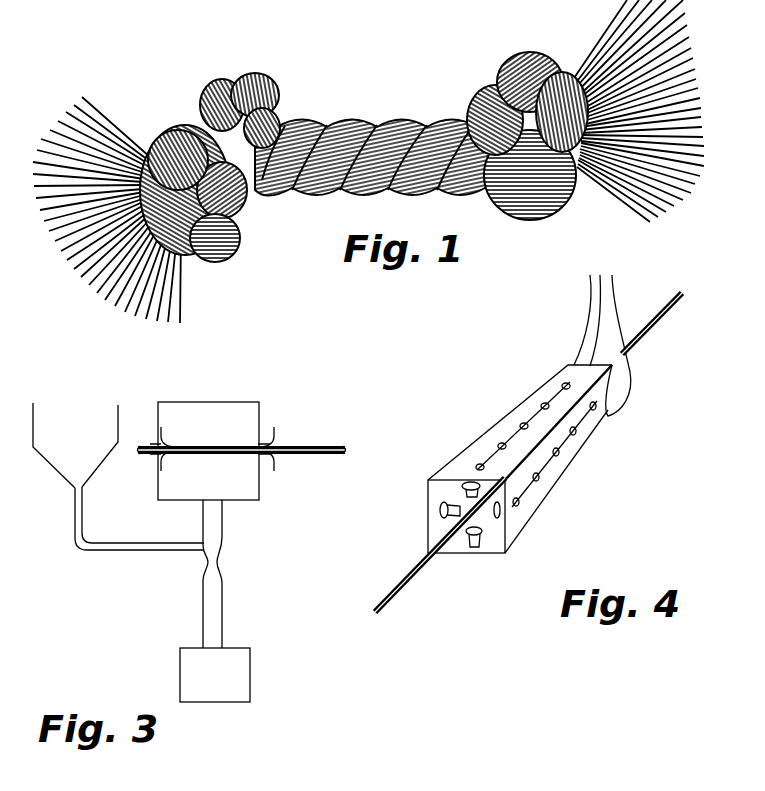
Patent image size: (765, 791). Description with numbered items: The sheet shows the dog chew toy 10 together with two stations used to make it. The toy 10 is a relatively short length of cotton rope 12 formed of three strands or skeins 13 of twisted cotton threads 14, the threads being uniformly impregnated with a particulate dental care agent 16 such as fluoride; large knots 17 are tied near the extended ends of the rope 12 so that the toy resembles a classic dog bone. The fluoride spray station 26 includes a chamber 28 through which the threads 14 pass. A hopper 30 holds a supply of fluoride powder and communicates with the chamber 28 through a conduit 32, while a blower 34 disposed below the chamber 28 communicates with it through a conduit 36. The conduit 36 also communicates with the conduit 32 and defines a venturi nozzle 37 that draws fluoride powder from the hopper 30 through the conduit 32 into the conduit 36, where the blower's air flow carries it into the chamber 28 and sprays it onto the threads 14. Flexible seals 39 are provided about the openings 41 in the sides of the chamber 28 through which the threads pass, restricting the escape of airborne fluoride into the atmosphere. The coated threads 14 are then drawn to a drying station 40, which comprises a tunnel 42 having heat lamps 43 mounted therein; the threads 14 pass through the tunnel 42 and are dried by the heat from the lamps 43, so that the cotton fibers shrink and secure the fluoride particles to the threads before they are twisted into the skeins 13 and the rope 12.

In FIG. 1, the dog chew toy 10 is at (215, 52).
In FIG. 1, the rope 12 is at (390, 121).
In FIG. 1, the strands or skeins 13 is at (335, 193).
In FIG. 1, the cotton threads 14 is at (347, 118).
In FIG. 3, the cotton threads 14 is at (222, 448).
In FIG. 4, the cotton threads 14 is at (410, 578).
In FIG. 1, the particulate dental care agent 16 is at (257, 76).
In FIG. 1, the knots 17 is at (177, 123).
In FIG. 3, the fluoride spray station 26 is at (295, 392).
In FIG. 3, the chamber 28 is at (192, 402).
In FIG. 3, the hopper 30 is at (120, 420).
In FIG. 3, the conduit 32 is at (126, 543).
In FIG. 3, the blower 34 is at (250, 663).
In FIG. 3, the conduit 36 is at (224, 610).
In FIG. 3, the venturi nozzle 37 is at (222, 562).
In FIG. 3, the flexible seals 39 is at (173, 440).
In FIG. 3, the openings 41 is at (157, 445).
In FIG. 4, the drying station 40 is at (518, 383).
In FIG. 4, the tunnel 42 is at (562, 470).
In FIG. 4, the heat lamps 43 is at (455, 502).